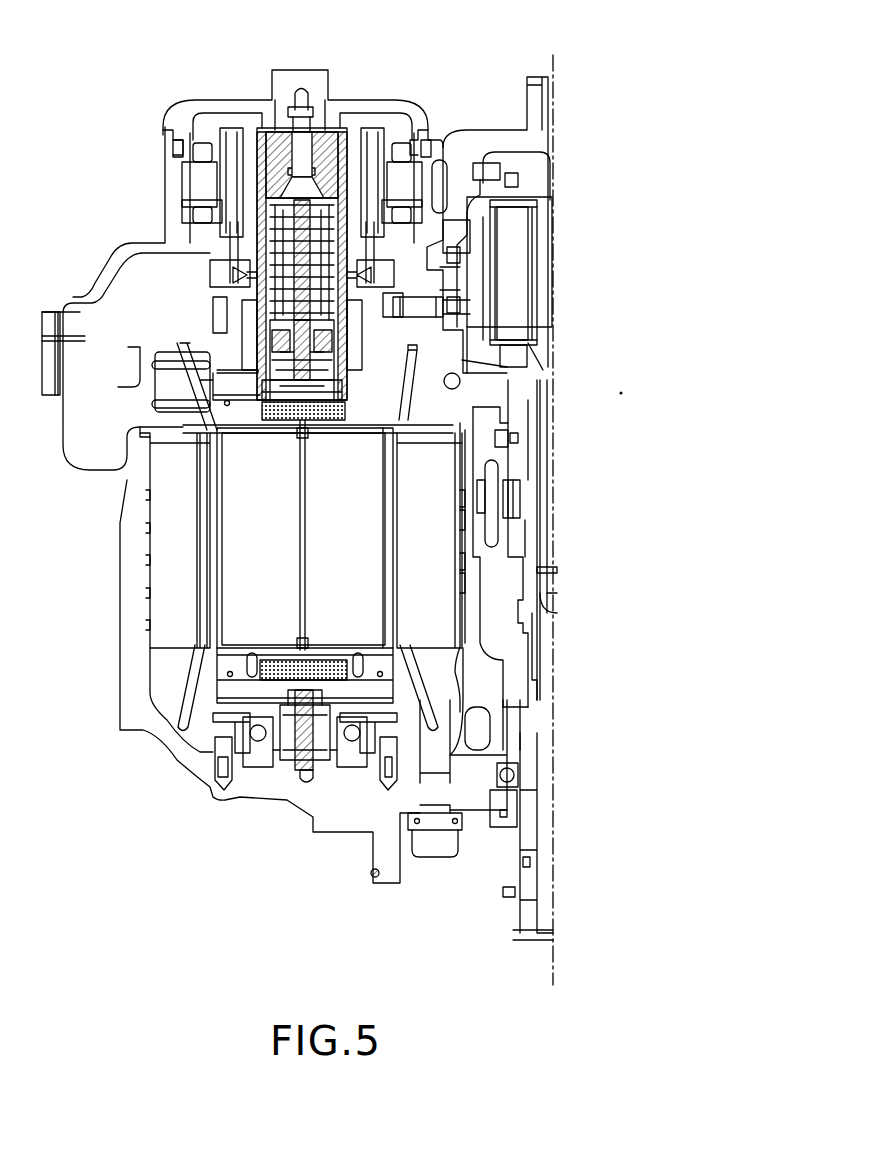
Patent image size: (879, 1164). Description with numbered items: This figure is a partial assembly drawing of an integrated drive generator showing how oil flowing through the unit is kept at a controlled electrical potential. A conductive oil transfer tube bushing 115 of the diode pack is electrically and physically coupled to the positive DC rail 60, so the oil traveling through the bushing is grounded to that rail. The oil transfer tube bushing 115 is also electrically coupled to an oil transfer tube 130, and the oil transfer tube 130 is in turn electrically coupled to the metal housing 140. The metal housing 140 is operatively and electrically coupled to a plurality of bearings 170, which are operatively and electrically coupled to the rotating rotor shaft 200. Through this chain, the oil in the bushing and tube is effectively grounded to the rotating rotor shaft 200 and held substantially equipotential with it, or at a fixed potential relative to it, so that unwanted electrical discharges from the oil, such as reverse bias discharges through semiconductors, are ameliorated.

The positive DC rail 60 is at (268, 382).
The oil transfer tube bushing 115 is at (301, 170).
The oil transfer tube 130 is at (298, 172).
The metal housing 140 is at (278, 92).
The bearings 170 is at (380, 272).
The rotating rotor shaft 200 is at (243, 368).